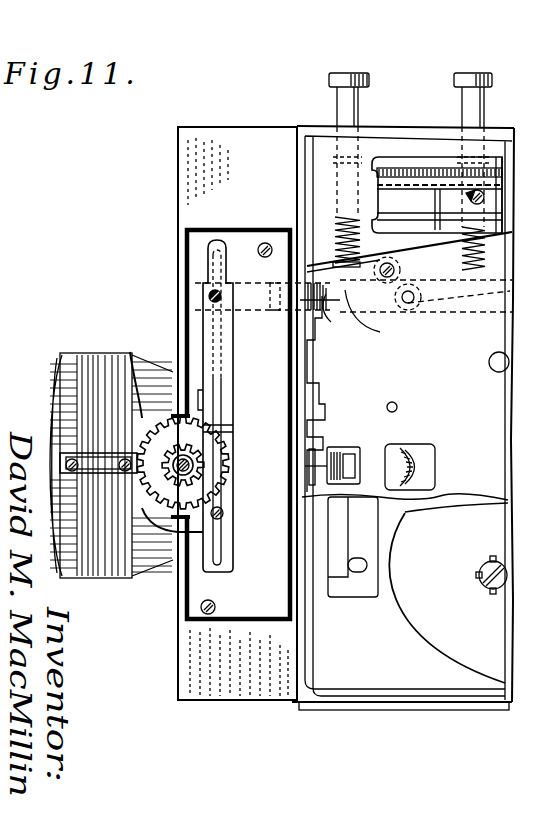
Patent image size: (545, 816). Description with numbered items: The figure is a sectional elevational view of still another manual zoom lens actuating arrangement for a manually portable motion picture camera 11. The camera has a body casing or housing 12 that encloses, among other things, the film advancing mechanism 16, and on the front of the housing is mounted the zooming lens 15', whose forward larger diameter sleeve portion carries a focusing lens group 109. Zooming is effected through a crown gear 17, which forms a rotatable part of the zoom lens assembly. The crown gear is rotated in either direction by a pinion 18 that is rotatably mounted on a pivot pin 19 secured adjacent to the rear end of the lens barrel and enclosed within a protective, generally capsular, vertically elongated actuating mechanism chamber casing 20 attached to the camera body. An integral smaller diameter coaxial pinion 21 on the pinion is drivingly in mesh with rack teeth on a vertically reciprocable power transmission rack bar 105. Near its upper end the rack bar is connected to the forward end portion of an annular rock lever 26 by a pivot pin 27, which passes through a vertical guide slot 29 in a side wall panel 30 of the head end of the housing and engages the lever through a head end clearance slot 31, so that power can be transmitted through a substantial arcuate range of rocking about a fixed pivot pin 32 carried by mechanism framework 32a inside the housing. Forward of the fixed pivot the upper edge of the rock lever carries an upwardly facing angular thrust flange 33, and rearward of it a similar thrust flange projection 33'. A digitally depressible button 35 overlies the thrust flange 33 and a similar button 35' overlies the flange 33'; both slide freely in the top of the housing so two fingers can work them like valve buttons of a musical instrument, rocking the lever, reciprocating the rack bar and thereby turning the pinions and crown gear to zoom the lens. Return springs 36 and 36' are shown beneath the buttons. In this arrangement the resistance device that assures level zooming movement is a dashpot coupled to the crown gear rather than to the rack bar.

The motion picture camera 11 is at (162, 143).
The housing 12 is at (40, 464).
The zooming lens 15' is at (111, 486).
The film advancing mechanism 16 is at (325, 448).
The crown gear 17 is at (143, 458).
The pinion 18 is at (168, 453).
The pivot pin 19 is at (172, 457).
The actuating mechanism chamber casing 20 is at (213, 621).
The coaxial pinion 21 is at (190, 446).
The rock lever 26 is at (331, 323).
The pivot pin 27 is at (208, 296).
The vertical guide slot 29 is at (220, 258).
The side wall panel 30 is at (250, 130).
The head end clearance slot 31 is at (192, 310).
The fixed pivot pin 32 is at (412, 304).
The mechanism framework 32a is at (470, 380).
The thrust flange 33 is at (409, 288).
The thrust flange projection 33' is at (475, 300).
The depressible button 35 is at (353, 123).
The depressible button 35' is at (487, 129).
The return spring 36 is at (332, 242).
The return spring 36' is at (441, 254).
The rack bar 105 is at (232, 490).
The focusing lens group 109 is at (511, 440).